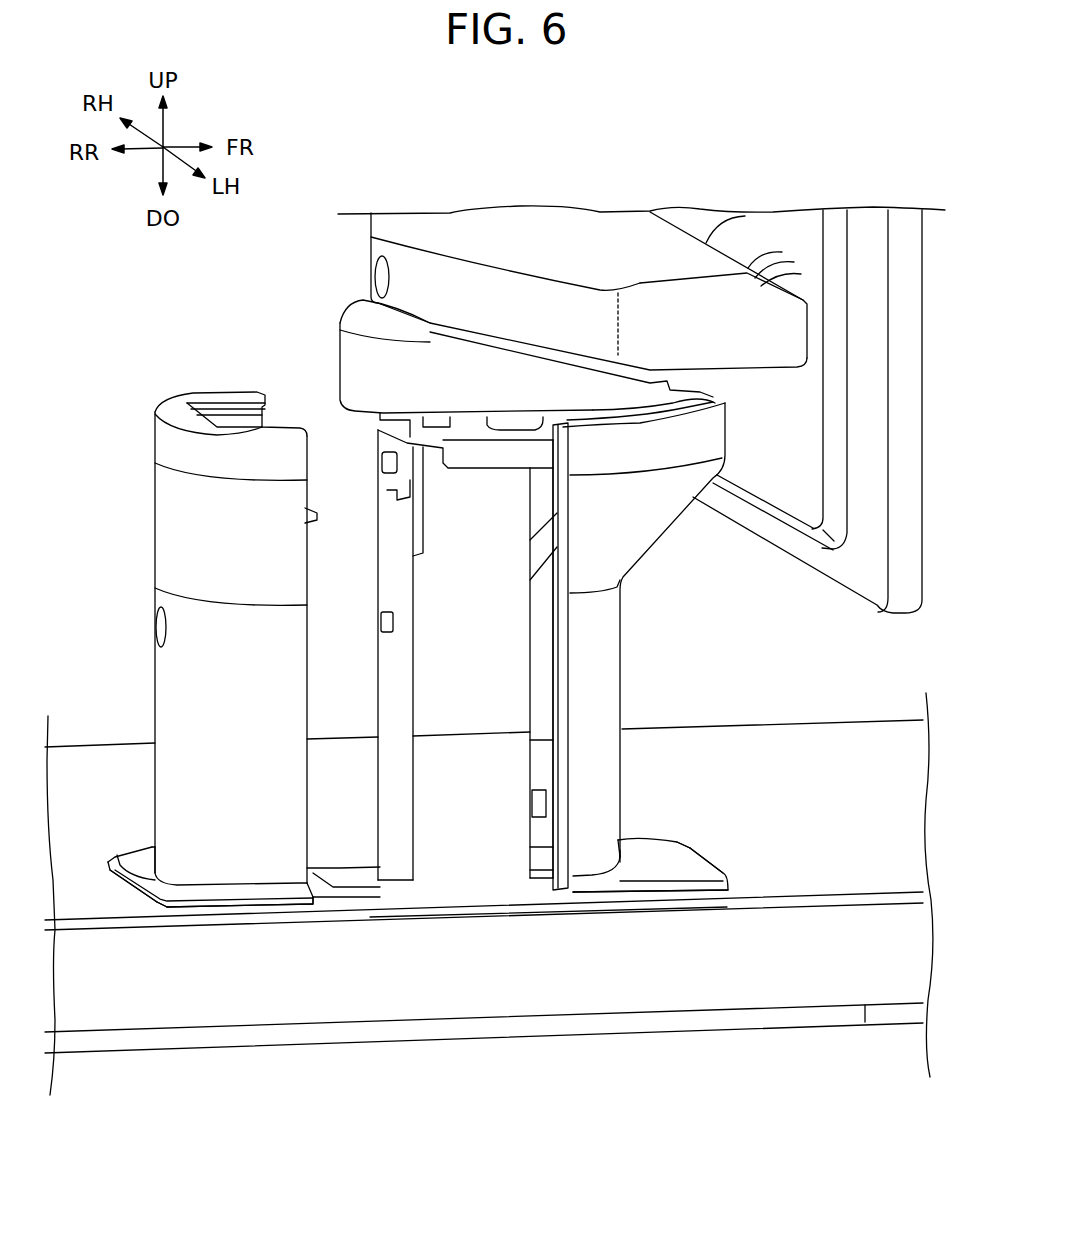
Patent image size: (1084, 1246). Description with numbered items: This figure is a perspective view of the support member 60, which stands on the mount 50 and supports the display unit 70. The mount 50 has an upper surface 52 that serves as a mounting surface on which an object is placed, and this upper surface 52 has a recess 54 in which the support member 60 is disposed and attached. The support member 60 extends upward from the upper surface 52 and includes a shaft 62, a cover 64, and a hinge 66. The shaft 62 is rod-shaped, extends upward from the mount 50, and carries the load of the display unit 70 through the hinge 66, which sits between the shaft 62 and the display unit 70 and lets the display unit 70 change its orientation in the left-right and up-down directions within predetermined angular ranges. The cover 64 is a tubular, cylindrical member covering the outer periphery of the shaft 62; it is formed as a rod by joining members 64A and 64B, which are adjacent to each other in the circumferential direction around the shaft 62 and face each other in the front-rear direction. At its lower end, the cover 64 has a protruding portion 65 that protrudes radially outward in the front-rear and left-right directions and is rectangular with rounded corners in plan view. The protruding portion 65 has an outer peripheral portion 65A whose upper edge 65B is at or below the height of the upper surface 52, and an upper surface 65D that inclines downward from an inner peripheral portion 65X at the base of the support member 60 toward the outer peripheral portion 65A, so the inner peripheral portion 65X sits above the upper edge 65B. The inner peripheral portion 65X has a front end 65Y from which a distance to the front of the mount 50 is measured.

The mount 50 is at (767, 722).
The upper surface 52 is at (688, 747).
The recess 54 is at (352, 867).
The support member 60 is at (183, 373).
The shaft 62 is at (393, 561).
The cover 64 is at (373, 1096).
The member 64A is at (270, 879).
The member 64B is at (587, 860).
The protruding portion 65 is at (192, 905).
The outer peripheral portion 65A is at (168, 892).
The upper edge 65B is at (130, 867).
The upper surface 65D is at (157, 905).
The inner peripheral portion 65X is at (153, 873).
The front end 65Y is at (622, 862).
The hinge 66 is at (373, 266).
The display unit 70 is at (926, 216).